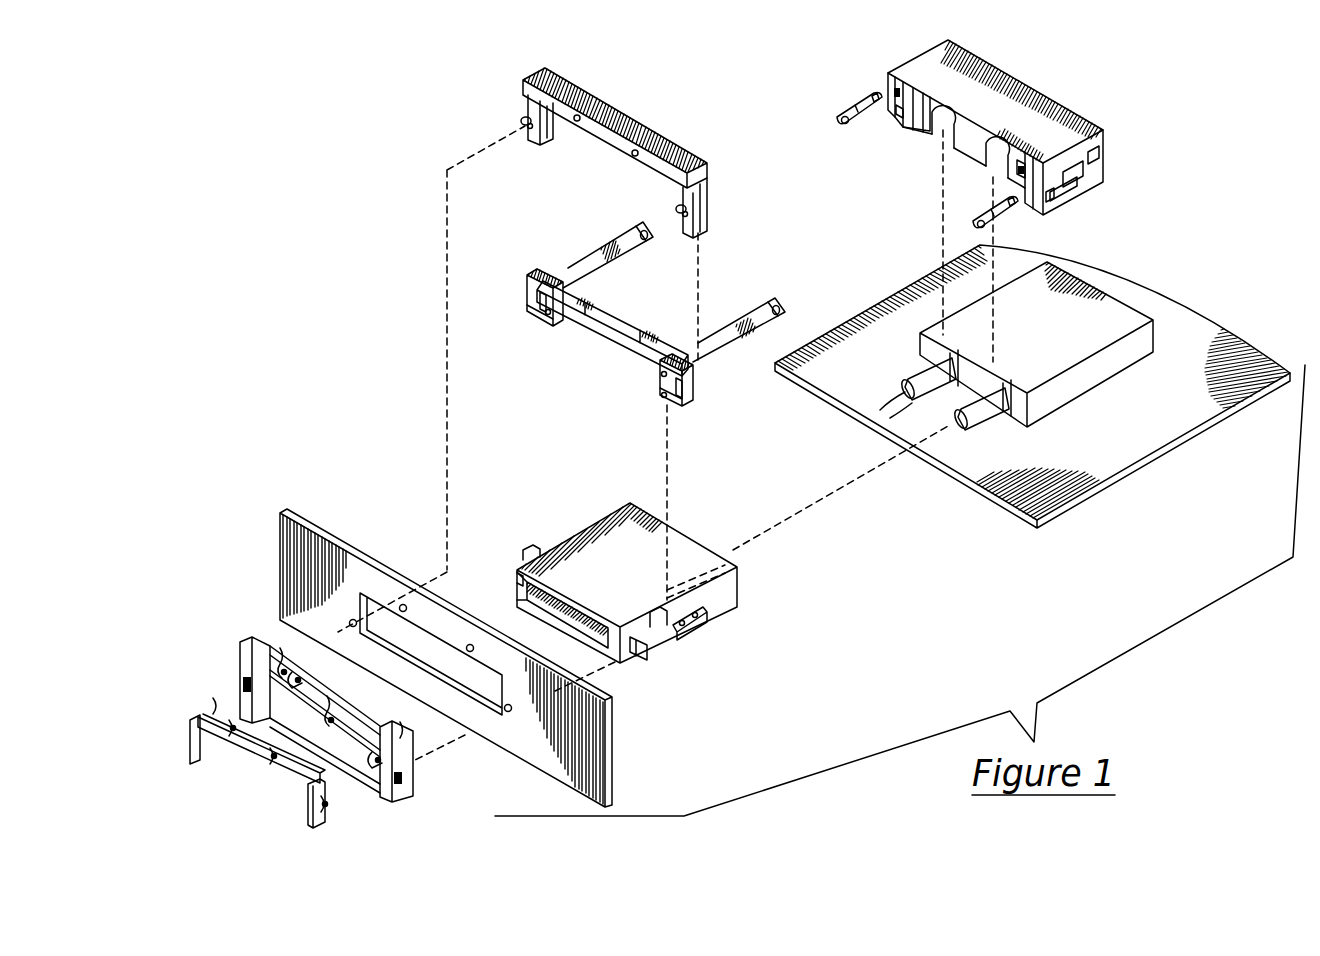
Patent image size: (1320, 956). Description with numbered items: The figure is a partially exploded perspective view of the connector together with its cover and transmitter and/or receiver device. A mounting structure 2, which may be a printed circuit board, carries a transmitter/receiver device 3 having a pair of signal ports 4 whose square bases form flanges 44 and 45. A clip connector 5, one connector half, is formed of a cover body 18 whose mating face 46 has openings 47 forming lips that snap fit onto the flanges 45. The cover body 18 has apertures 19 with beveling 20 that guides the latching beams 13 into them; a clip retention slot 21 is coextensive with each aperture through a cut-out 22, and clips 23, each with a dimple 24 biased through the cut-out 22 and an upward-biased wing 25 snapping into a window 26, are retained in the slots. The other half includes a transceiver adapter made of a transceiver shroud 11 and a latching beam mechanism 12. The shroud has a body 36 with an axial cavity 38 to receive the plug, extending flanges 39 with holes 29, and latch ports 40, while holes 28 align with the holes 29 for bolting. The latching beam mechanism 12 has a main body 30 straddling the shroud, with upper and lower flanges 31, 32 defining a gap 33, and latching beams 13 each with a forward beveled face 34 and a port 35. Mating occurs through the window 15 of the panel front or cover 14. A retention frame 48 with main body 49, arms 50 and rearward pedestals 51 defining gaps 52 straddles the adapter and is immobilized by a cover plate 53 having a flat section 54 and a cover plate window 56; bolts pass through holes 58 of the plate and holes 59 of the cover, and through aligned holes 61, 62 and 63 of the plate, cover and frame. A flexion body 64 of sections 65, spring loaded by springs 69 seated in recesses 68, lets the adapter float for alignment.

The mounting structure 2 is at (1180, 327).
The transmitter/receiver device 3 is at (1117, 377).
The signal ports 4 is at (957, 417).
The clip connector 5 is at (1010, 73).
The transceiver shroud 11 is at (740, 593).
The latching beam mechanism 12 is at (737, 350).
The latching beams 13 is at (603, 243).
The panel front or cover 14 is at (275, 573).
The window 15 is at (460, 675).
The cover body 18 is at (1067, 110).
The apertures 19 is at (896, 123).
The beveling 20 is at (890, 112).
The clip retention slot 21 is at (1075, 172).
The cut-out 22 is at (1062, 192).
The clips 23 is at (857, 98).
The dimple 24 is at (840, 127).
The wing 25 is at (877, 95).
The window 26 is at (1095, 158).
The holes 28 is at (667, 633).
The holes 29 is at (560, 312).
The main body 30 is at (610, 307).
The upper flange 31 is at (527, 278).
The lower flange 32 is at (528, 320).
The gap 33 is at (540, 307).
The forward beveled face 34 is at (652, 232).
The port 35 is at (633, 227).
The body 36 is at (683, 567).
The axial cavity 38 is at (577, 620).
The extending flanges 39 is at (540, 548).
The latch ports 40 is at (518, 577).
The flange 44 is at (940, 367).
The flange 45 is at (1003, 393).
The mating face 46 is at (967, 150).
The openings 47 is at (942, 130).
The retention frame 48 is at (643, 122).
The main body 49 is at (595, 103).
The extending arms 50 is at (527, 98).
The pedestals 51 is at (522, 121).
The gaps 52 is at (555, 117).
The cover plate 53 is at (237, 667).
The flat section 54 is at (247, 640).
The cover plate window 56 is at (365, 768).
The holes 58 is at (301, 679).
The holes 59 is at (403, 604).
The holes 61 is at (410, 780).
The holes 62 is at (351, 620).
The holes 63 is at (529, 128).
The flexion body 64 is at (173, 747).
The sections 65 is at (197, 761).
The recesses 68 is at (232, 722).
The springs 69 is at (280, 665).